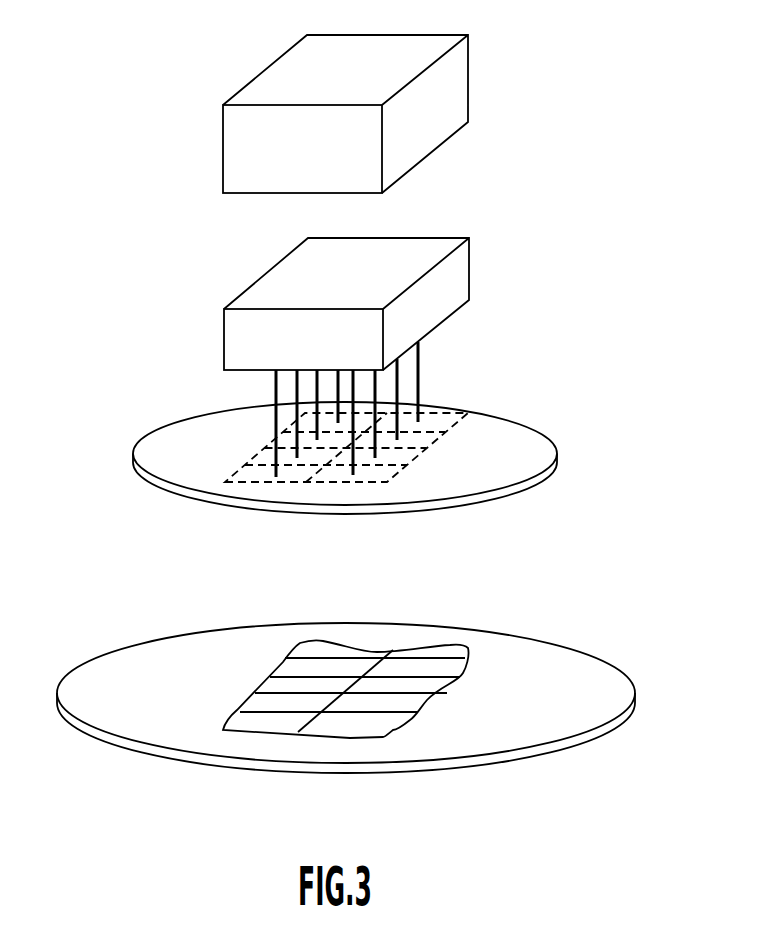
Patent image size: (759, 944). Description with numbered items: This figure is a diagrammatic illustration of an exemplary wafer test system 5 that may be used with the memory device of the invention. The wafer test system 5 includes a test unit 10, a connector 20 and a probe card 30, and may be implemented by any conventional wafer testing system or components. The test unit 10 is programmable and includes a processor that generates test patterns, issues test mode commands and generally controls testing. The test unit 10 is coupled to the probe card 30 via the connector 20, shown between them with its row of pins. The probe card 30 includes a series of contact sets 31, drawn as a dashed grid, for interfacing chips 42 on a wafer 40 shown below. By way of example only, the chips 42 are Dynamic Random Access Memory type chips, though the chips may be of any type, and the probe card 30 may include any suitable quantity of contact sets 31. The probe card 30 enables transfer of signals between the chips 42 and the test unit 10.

The wafer test system 5 is at (659, 130).
The test unit 10 is at (427, 156).
The connector 20 is at (511, 265).
The probe card 30 is at (467, 432).
The contact sets 31 is at (452, 407).
The wafer 40 is at (623, 742).
The chips 42 is at (395, 616).